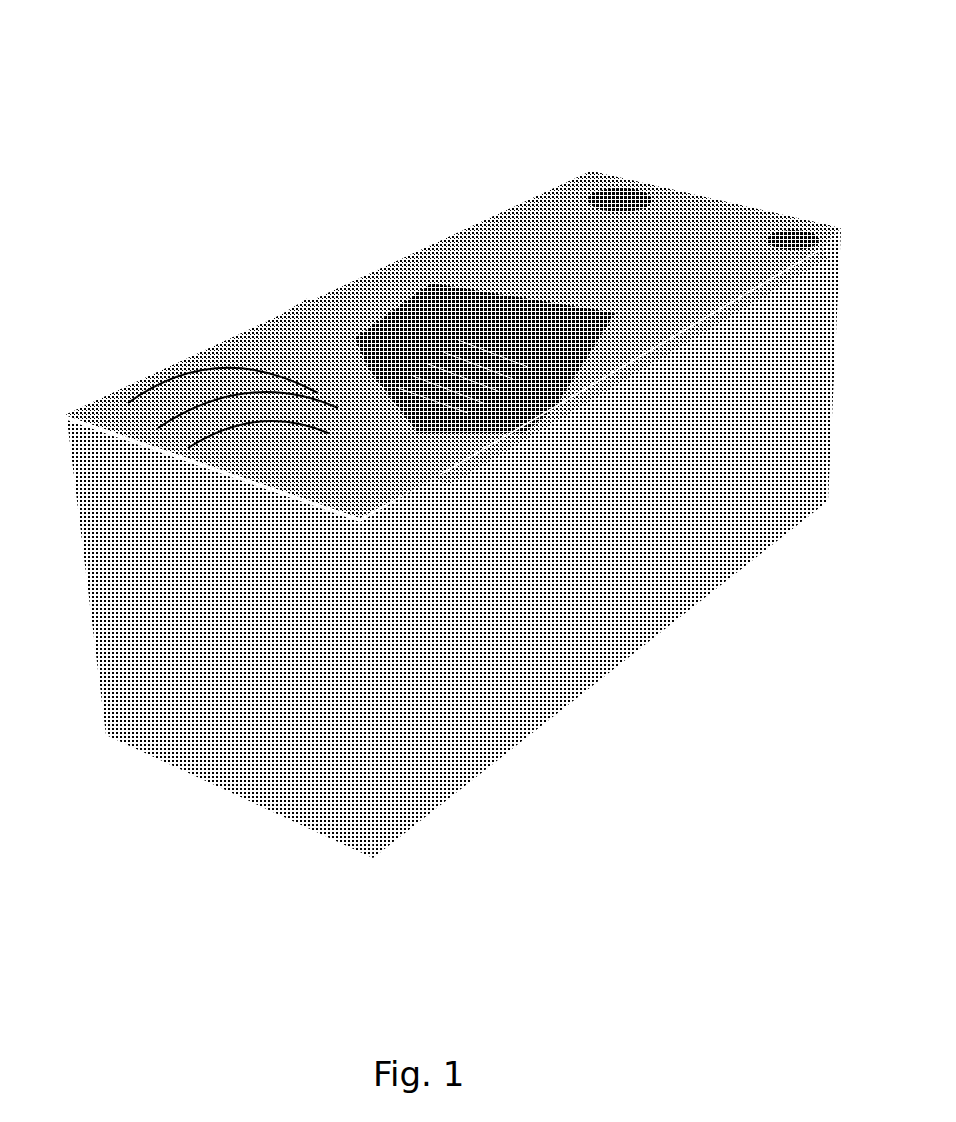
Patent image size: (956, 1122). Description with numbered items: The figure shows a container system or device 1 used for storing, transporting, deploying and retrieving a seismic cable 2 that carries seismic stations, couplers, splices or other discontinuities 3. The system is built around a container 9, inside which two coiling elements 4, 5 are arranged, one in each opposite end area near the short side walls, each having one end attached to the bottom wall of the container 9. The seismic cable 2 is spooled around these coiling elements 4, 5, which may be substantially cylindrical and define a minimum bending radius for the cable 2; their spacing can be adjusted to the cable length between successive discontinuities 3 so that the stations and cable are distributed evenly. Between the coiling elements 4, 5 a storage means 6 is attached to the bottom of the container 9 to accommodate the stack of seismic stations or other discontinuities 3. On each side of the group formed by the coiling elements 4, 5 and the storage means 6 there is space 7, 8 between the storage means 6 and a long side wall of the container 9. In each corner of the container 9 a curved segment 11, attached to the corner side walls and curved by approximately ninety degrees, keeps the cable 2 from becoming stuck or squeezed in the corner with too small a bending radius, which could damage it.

The container system 1 is at (453, 445).
The seismic cable 2 is at (453, 320).
The seismic stations and/or couplers/splices and/or other discontinuities 3 is at (430, 303).
The coiling element 4 is at (337, 399).
The coiling element 5 is at (610, 245).
The storage means 6 is at (398, 300).
The space 7 is at (557, 387).
The space 8 is at (350, 300).
The container 9 is at (520, 598).
The curved segment 11 is at (112, 402).